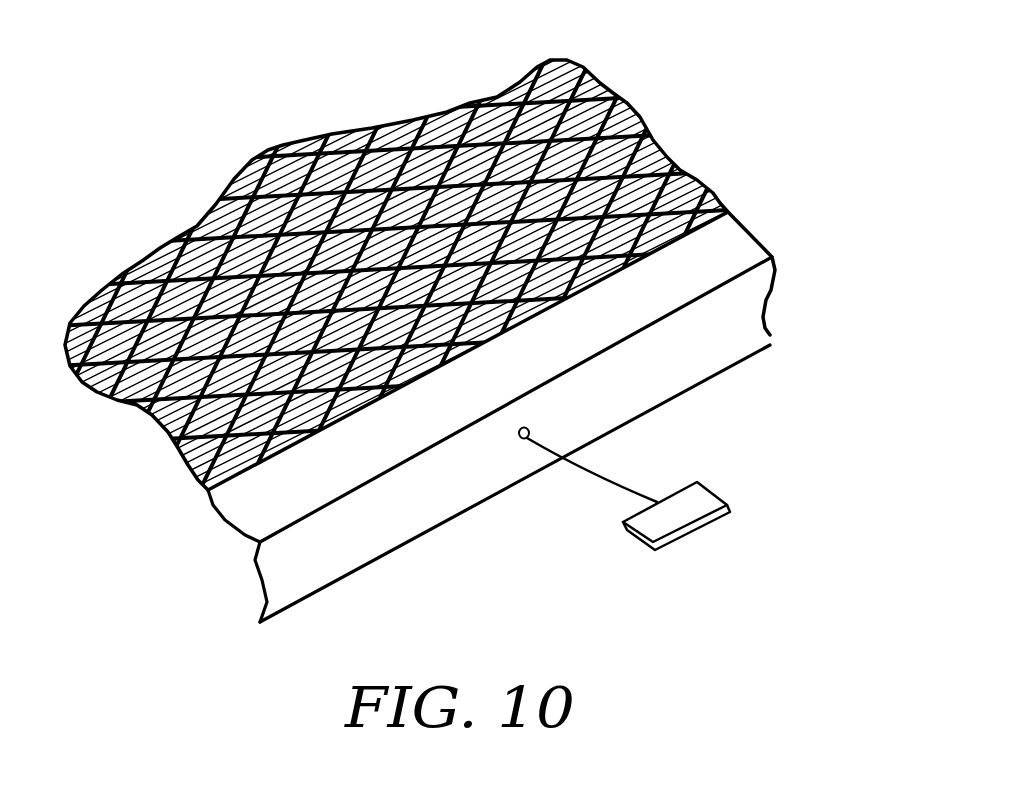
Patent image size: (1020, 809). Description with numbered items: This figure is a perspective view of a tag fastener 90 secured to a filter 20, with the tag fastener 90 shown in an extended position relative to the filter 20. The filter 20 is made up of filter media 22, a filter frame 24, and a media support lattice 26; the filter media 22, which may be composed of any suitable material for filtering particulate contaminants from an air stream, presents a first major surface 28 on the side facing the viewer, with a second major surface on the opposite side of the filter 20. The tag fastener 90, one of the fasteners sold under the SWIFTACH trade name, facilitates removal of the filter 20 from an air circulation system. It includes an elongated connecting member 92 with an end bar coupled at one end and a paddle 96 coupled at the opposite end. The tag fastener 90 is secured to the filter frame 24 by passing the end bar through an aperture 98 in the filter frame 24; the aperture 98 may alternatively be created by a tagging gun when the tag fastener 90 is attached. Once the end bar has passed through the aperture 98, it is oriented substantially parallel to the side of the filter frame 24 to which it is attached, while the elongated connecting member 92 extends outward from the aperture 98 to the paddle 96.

The filter 20 is at (723, 177).
The filter media 22 is at (550, 158).
The filter frame 24 is at (343, 478).
The media support lattice 26 is at (628, 110).
The first major surface 28 is at (420, 275).
The tag fastener 90 is at (639, 521).
The elongated connecting member 92 is at (617, 482).
The paddle 96 is at (700, 498).
The aperture 98 is at (515, 443).